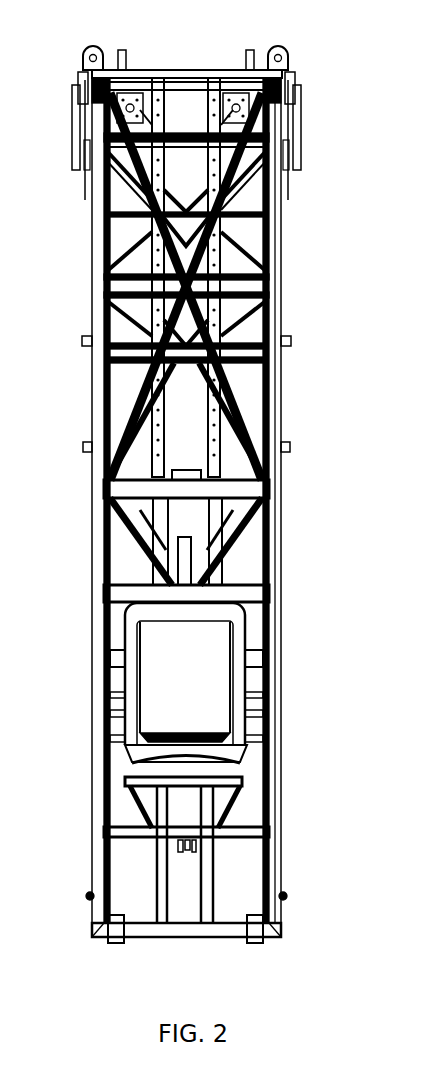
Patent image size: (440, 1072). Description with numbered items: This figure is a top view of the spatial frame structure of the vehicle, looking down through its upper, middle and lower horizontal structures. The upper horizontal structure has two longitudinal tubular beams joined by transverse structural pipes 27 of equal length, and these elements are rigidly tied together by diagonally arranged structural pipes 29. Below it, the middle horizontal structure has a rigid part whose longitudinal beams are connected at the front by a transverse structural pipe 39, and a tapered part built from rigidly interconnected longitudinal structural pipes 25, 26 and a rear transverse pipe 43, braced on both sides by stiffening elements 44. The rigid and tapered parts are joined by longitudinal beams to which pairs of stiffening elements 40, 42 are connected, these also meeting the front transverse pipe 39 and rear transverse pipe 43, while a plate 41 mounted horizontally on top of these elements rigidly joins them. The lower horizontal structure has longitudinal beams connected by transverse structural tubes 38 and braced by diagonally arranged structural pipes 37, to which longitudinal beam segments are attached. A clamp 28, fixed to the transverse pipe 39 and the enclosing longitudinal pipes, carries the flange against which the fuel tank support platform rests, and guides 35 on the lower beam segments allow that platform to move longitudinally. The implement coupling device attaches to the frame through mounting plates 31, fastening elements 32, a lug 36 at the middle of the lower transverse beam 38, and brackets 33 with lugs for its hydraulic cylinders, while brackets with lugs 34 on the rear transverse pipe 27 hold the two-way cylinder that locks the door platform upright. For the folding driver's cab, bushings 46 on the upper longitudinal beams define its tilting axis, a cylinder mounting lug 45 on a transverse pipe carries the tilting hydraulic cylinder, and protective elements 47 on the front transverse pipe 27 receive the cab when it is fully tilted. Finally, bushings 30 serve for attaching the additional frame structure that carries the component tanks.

The longitudinal structural pipe of the tapered part 25 is at (247, 682).
The longitudinal structural pipe of the tapered part 26 is at (217, 893).
The transverse structural pipe 27 is at (120, 594).
The clamp 28 is at (173, 503).
The diagonally arranged structural pipe 29 is at (113, 460).
The bushing 30 is at (82, 443).
The mounting plate 31 is at (88, 193).
The fastening element 32 is at (90, 103).
The bracket with lug 33 is at (91, 54).
The bracket with lug 34 is at (123, 66).
The guide 35 is at (157, 93).
The lug 36 is at (192, 130).
The diagonally arranged structural pipe 37 is at (245, 305).
The transverse structural tube 38 is at (247, 353).
The front transverse structural pipe of the rigid part 39 is at (247, 488).
The stiffening element 40 is at (232, 507).
The plate 41 is at (232, 542).
The stiffening element 42 is at (240, 592).
The rear transverse structural pipe of the tapered part 43 is at (213, 782).
The stiffening element 44 is at (223, 800).
The cylinder mounting lug 45 is at (195, 847).
The bushing 46 is at (87, 896).
The protective element 47 is at (117, 943).